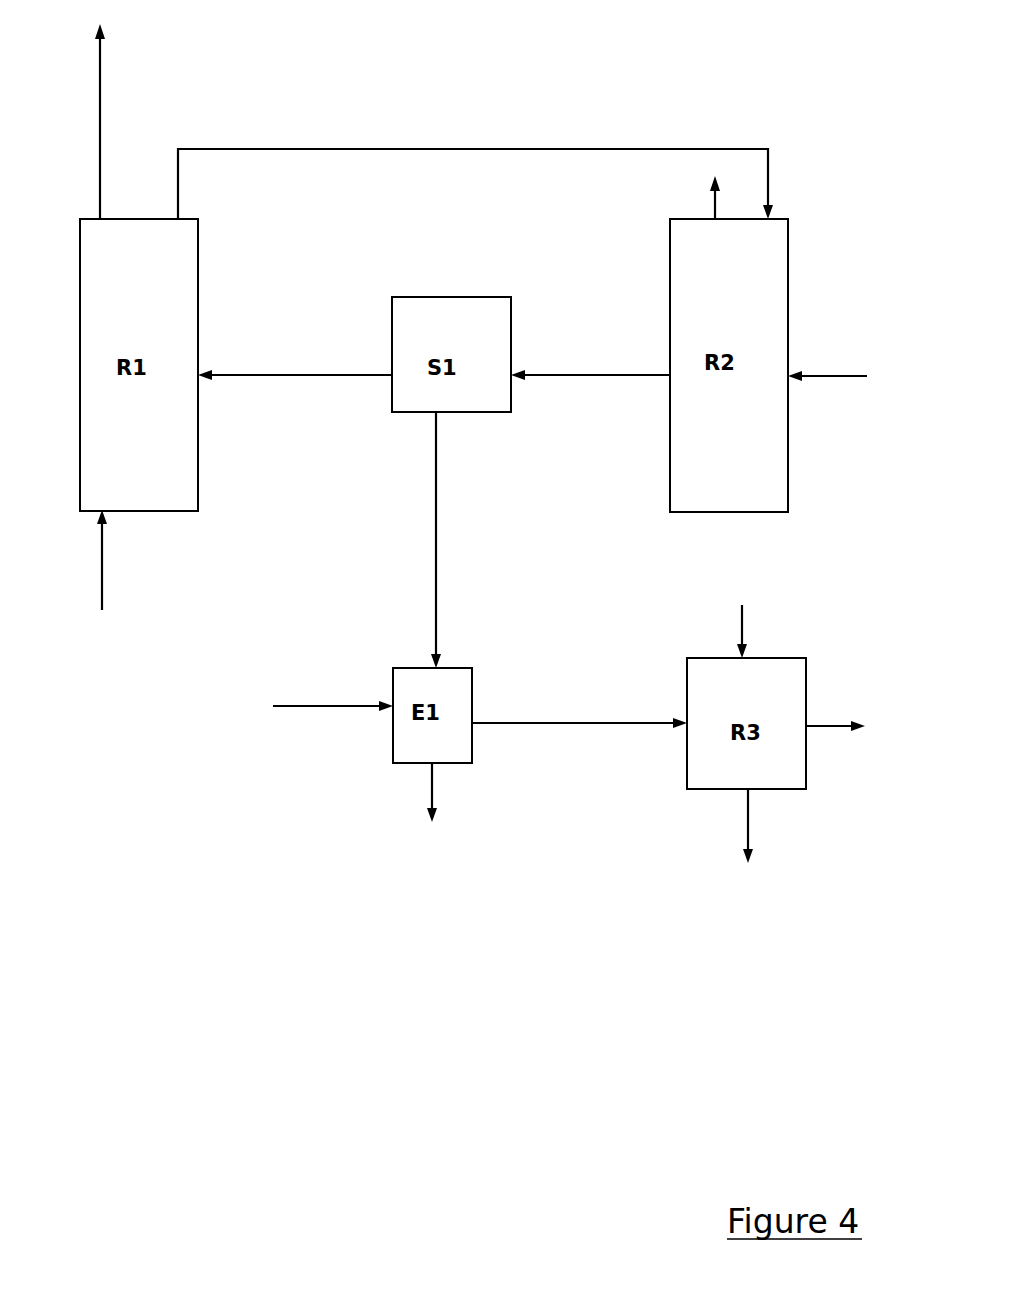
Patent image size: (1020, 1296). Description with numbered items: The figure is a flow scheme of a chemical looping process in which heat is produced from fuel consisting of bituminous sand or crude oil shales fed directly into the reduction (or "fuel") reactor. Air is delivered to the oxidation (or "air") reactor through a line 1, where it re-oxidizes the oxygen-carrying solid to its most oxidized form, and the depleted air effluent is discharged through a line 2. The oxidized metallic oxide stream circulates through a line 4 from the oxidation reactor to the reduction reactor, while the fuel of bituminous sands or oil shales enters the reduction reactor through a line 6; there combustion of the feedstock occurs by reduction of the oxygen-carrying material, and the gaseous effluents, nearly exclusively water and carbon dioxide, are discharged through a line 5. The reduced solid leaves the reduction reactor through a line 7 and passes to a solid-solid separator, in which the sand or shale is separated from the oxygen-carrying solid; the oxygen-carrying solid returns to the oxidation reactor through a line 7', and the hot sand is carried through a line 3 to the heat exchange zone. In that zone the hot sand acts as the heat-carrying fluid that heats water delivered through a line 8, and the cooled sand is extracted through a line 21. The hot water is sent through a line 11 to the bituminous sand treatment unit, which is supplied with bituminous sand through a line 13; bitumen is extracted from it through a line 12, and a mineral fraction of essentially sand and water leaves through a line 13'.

The line 1 is at (102, 576).
The line 2 is at (100, 122).
The line 3 is at (436, 528).
The line 4 is at (450, 149).
The line 5 is at (701, 197).
The line 6 is at (830, 378).
The line 7 is at (590, 415).
The line 7' is at (295, 419).
The line 8 is at (290, 704).
The line 11 is at (547, 721).
The line 12 is at (828, 726).
The line 13 is at (769, 624).
The line 13' is at (790, 826).
The line 21 is at (432, 795).